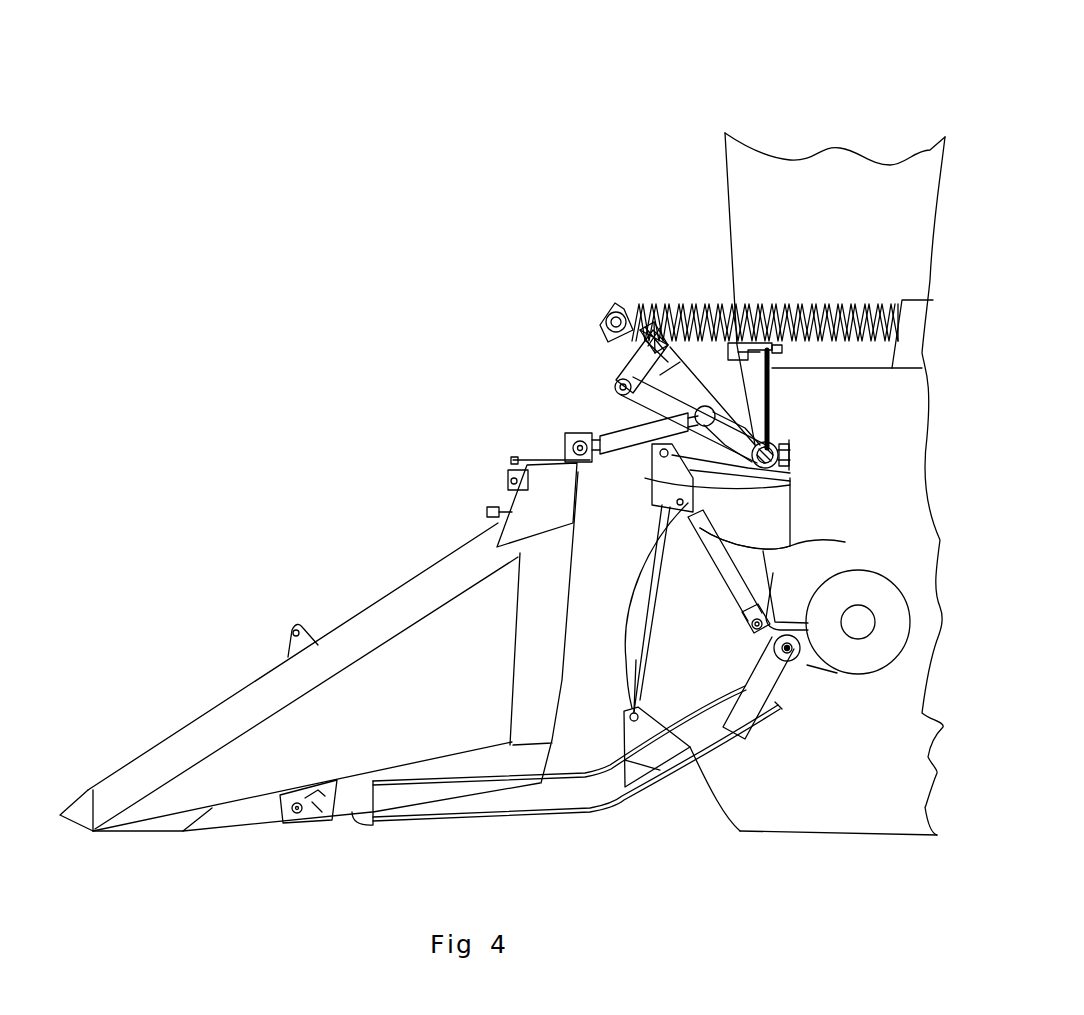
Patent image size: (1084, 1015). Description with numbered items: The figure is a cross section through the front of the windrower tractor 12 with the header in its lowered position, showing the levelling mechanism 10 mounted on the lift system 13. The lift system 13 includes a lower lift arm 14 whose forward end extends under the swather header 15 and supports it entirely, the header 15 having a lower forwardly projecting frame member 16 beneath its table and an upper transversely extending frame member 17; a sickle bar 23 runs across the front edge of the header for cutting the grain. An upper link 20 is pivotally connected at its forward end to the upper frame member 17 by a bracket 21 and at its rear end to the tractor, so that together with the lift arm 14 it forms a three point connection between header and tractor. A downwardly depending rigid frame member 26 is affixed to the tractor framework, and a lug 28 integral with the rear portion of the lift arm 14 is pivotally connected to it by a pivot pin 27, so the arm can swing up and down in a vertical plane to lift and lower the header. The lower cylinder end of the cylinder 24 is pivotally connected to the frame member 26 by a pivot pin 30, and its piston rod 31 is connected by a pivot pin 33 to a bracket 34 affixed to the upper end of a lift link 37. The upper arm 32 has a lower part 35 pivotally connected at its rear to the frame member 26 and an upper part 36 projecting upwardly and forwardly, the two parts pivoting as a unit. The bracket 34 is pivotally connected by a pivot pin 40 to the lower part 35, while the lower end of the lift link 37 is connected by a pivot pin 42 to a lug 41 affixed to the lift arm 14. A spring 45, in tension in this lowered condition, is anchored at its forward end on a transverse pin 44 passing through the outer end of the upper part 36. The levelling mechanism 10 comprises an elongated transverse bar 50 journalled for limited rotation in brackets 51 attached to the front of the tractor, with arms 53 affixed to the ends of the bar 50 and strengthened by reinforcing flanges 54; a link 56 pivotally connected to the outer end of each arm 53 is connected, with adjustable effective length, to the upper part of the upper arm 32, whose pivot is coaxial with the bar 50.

The levelling mechanism 10 is at (612, 397).
The windrower tractor 12 is at (850, 128).
The lift system 13 is at (619, 615).
The lower lift arm 14 is at (540, 817).
The swather header 15 is at (342, 606).
The lower frame member 16 is at (270, 817).
The upper frame member 17 is at (520, 460).
The upper link 20 is at (628, 442).
The bracket 21 is at (565, 445).
The sickle bar 23 is at (83, 800).
The cylinder 24 is at (738, 587).
The rigid frame member 26 is at (788, 660).
The pivot pin 27 is at (787, 660).
The lug 28 is at (750, 703).
The pivot pin 30 is at (757, 640).
The piston rod 31 is at (770, 552).
The upper arm 32 is at (704, 484).
The pivot pin 33 is at (680, 513).
The bracket 34 is at (638, 568).
The lower part 35 is at (660, 497).
The upper part 36 is at (603, 322).
The lift link 37 is at (640, 660).
The pivot pin 40 is at (790, 478).
The lug 41 is at (643, 757).
The pivot pin 42 is at (630, 715).
The transverse pin 44 is at (613, 303).
The spring 45 is at (860, 306).
The elongated bar 50 is at (790, 473).
The bracket 51 is at (650, 390).
The arm 53 is at (770, 380).
The reinforcing flange 54 is at (723, 432).
The link 56 is at (627, 357).